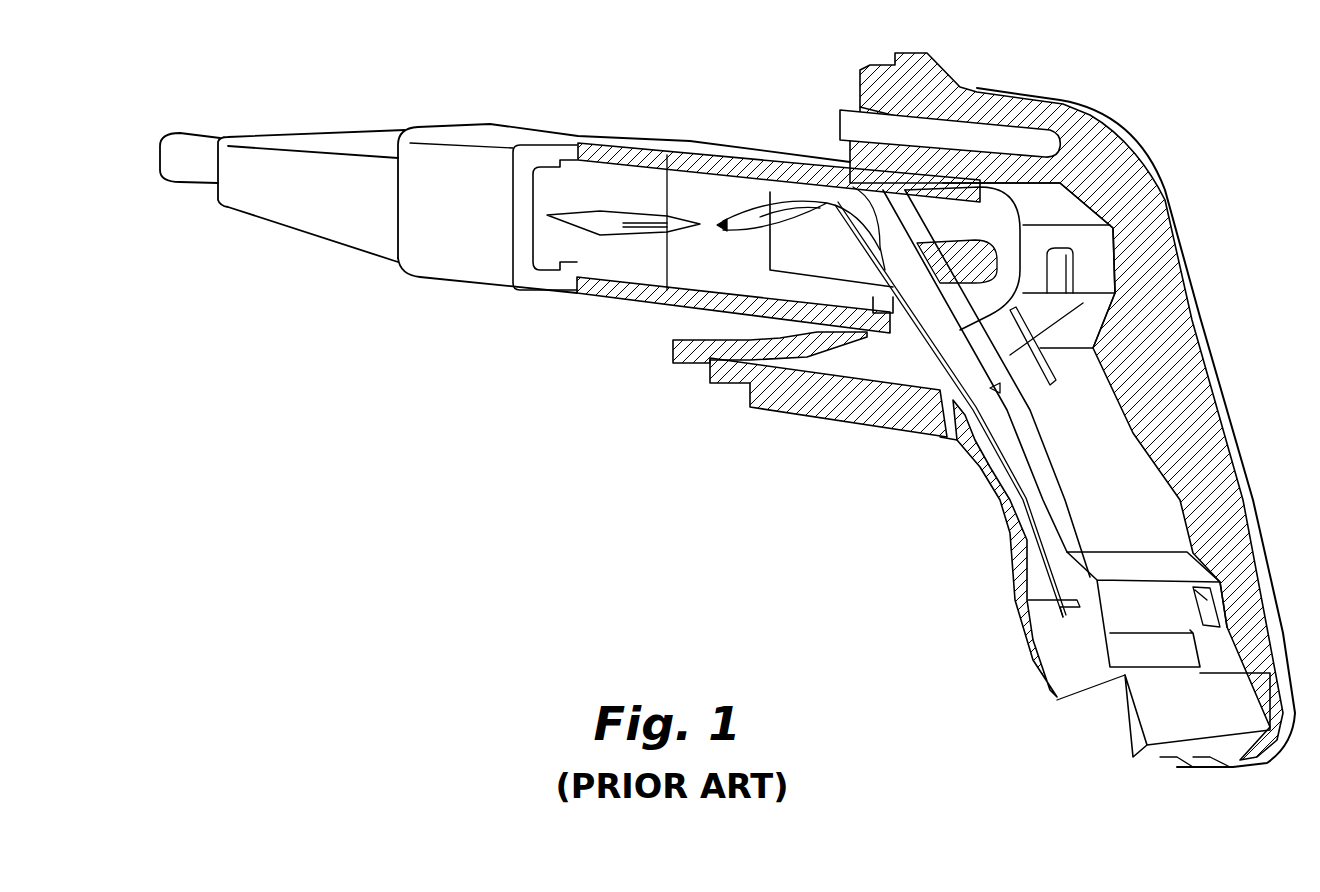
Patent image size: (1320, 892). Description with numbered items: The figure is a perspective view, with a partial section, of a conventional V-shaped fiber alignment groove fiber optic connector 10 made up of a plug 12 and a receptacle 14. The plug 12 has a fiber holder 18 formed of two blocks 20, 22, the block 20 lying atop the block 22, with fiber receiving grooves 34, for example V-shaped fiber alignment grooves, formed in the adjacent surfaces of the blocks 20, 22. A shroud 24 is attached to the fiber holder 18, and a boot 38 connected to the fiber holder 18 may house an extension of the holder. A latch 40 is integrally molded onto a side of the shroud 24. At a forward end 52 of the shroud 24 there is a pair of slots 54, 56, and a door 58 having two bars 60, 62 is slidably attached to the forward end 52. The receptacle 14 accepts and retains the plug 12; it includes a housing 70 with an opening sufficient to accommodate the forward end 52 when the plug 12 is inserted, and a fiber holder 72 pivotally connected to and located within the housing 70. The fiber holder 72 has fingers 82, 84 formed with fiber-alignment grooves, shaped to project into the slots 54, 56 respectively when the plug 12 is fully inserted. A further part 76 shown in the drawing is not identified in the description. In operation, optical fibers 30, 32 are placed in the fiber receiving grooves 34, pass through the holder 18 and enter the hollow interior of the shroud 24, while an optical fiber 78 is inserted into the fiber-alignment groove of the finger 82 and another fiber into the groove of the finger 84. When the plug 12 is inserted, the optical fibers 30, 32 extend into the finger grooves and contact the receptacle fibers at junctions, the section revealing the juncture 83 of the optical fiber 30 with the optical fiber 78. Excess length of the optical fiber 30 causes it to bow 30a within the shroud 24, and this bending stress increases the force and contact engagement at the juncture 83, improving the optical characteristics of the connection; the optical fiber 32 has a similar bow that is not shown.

The fiber optic connector 10 is at (426, 380).
The plug 12 is at (378, 272).
The receptacle 14 is at (818, 430).
The fiber holder 18 is at (772, 270).
The block 20 is at (620, 187).
The block 22 is at (627, 260).
The shroud 24 is at (667, 147).
The optical fiber 30 is at (747, 205).
The bow 30a is at (780, 200).
The optical fiber 32 is at (783, 225).
The fiber receiving grooves 34 is at (577, 217).
The boot 38 is at (302, 142).
The latch 40 is at (683, 362).
The forward end 52 is at (950, 197).
The slot 54 is at (993, 248).
The slot 56 is at (1037, 267).
The door 58 is at (1093, 213).
The bar 60 is at (1023, 357).
The bar 62 is at (1083, 300).
The housing 70 is at (990, 497).
The fiber holder 72 is at (1168, 654).
The top cover 76 is at (935, 72).
The optical fiber 78 is at (1063, 612).
The finger 82 is at (950, 343).
The juncture 83 is at (963, 437).
The finger 84 is at (950, 262).